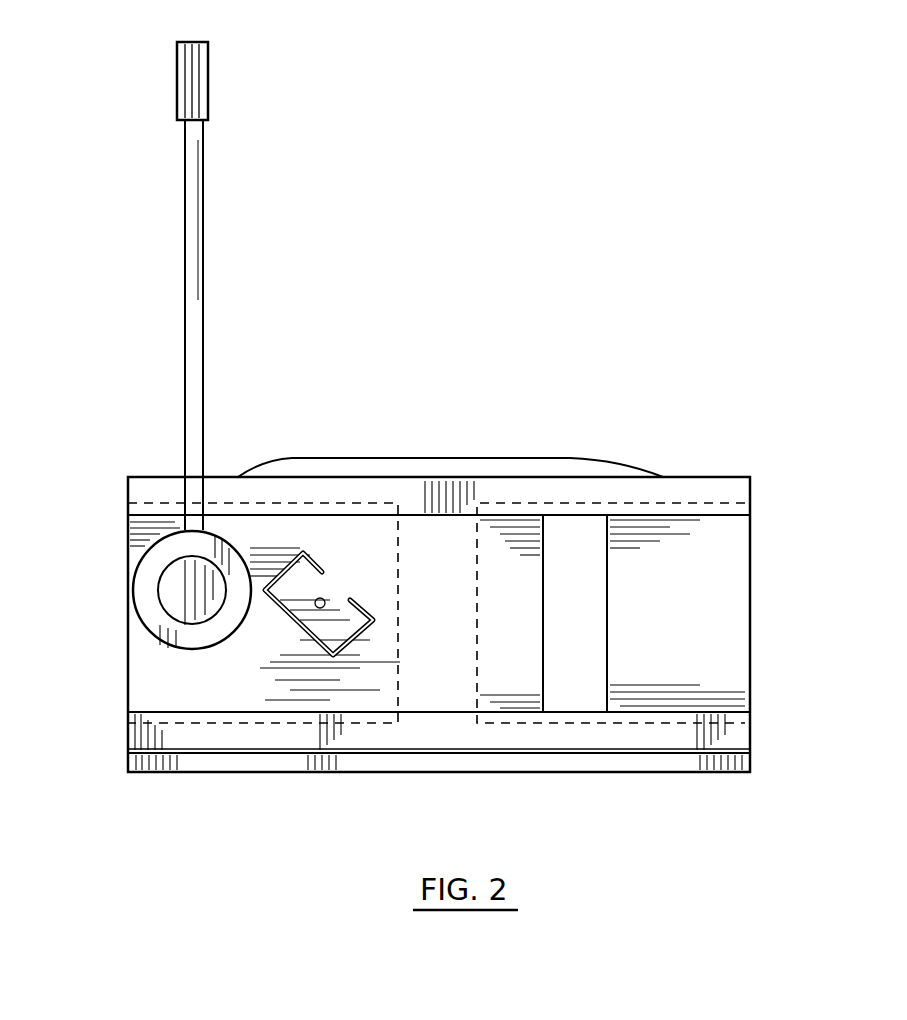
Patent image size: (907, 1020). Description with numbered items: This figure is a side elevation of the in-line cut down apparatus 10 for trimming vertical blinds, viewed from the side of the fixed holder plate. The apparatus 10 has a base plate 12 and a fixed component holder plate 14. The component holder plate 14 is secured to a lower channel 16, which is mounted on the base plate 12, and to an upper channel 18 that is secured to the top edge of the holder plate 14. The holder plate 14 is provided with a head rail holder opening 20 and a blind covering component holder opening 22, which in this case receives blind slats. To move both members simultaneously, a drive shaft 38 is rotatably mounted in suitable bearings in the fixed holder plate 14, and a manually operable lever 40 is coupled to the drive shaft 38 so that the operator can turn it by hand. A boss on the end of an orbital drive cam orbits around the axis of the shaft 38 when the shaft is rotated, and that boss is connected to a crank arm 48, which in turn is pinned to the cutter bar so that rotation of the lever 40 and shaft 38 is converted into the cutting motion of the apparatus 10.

The in-line cut down apparatus 10 is at (790, 461).
The base plate 12 is at (225, 753).
The fixed component holder plate 14 is at (698, 569).
The lower channel 16 is at (710, 712).
The upper channel 18 is at (504, 477).
The head rail holder opening 20 is at (367, 608).
The blind covering component holder opening 22 is at (610, 625).
The drive shaft 38 is at (147, 598).
The manually operable lever 40 is at (197, 220).
The crank arm 48 is at (330, 458).